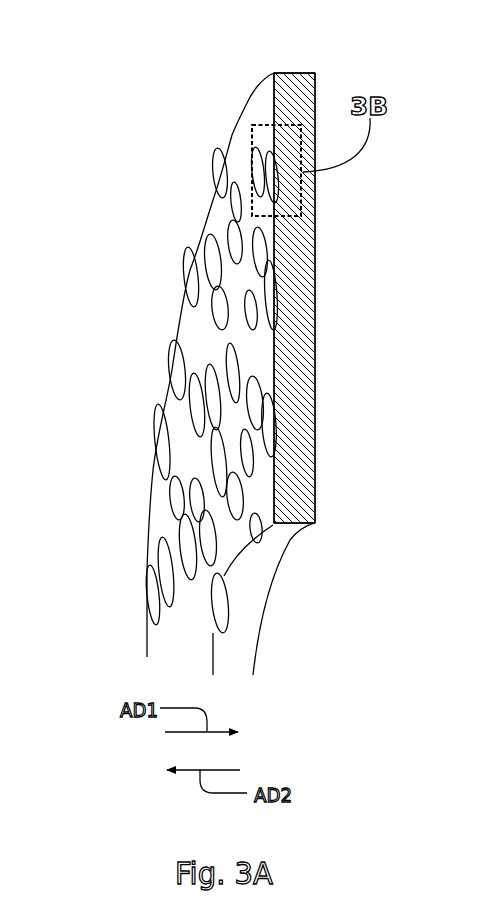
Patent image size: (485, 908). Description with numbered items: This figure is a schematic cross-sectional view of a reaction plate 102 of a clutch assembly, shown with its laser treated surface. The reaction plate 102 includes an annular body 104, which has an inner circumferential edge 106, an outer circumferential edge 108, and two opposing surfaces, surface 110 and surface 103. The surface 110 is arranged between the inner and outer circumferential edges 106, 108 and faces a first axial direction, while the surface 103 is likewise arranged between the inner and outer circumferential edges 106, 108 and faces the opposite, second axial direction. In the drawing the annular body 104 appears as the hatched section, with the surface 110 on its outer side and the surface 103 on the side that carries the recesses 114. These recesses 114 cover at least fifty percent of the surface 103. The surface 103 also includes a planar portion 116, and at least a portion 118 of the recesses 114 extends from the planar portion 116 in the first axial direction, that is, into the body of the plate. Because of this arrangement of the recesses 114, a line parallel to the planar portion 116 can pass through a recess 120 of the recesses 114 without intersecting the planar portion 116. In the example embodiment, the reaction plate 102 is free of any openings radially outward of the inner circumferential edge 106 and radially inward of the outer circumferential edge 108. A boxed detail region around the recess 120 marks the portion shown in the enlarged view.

The reaction plate 102 is at (253, 80).
The laser treated surface 103 is at (274, 355).
The annular body 104 is at (297, 243).
The inner circumferential edge 106 is at (285, 523).
The outer circumferential edge 108 is at (297, 73).
The surface 110 is at (315, 297).
The recesses 114 is at (195, 342).
The planar portion 116 is at (265, 492).
The portion of recesses 118 is at (283, 411).
The recess 120 is at (266, 141).